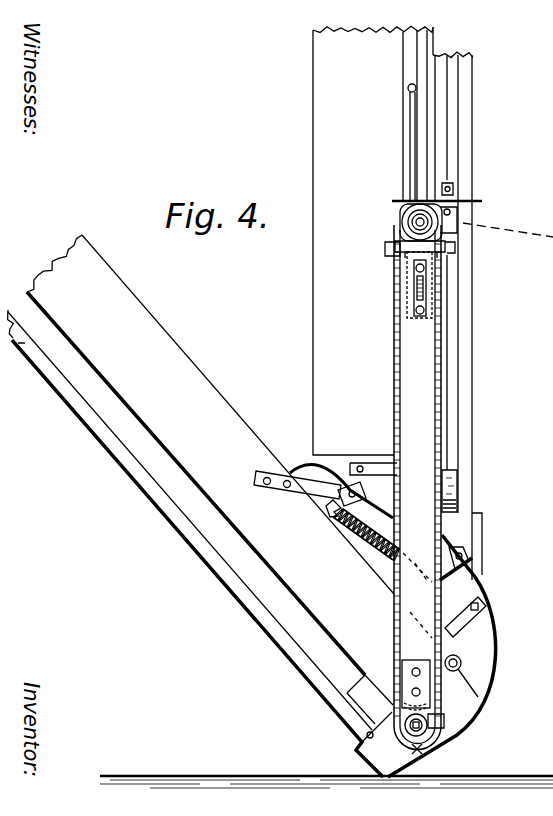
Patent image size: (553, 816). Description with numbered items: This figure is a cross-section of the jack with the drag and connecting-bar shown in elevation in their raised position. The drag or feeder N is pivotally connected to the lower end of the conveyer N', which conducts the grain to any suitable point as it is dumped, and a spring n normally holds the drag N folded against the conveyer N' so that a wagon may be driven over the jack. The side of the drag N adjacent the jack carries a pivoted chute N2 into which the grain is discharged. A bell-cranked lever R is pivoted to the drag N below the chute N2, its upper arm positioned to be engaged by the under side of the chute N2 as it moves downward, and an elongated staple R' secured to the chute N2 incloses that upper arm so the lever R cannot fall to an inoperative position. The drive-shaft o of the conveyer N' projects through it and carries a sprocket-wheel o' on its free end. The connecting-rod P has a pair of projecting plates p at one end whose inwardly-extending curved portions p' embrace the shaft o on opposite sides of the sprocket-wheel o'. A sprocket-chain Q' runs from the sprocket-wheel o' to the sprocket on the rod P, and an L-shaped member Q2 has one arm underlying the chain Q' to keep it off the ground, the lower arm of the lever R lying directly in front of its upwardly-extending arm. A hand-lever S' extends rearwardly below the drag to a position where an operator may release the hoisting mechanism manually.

The drag or feeder N is at (406, 303).
The elongated staple R' is at (397, 142).
The bell-cranked lever R is at (448, 198).
The pivoted chute N2 is at (369, 253).
The L-shaped member Q2 is at (391, 251).
The hand-lever S' is at (456, 285).
The sprocket-chain Q' is at (422, 487).
The conveyer N' is at (302, 480).
The spring n is at (360, 536).
The connecting-rod P is at (412, 612).
The projecting plates p is at (397, 683).
The inwardly-extending curved portions p' is at (455, 722).
The drive-shaft o is at (430, 733).
The sprocket-wheel o' is at (425, 758).